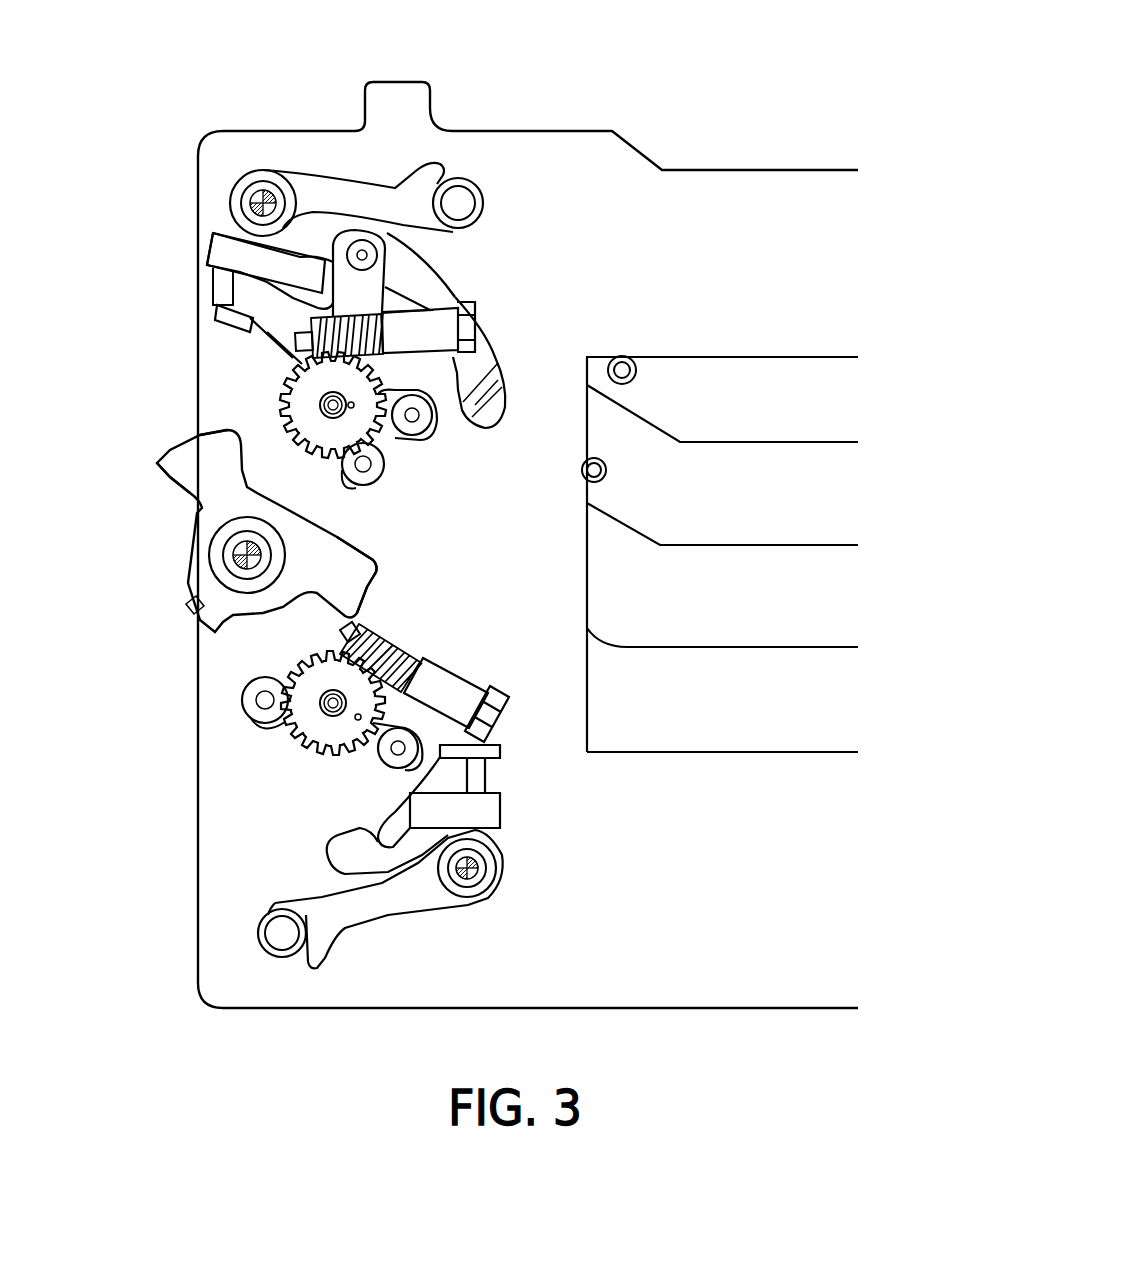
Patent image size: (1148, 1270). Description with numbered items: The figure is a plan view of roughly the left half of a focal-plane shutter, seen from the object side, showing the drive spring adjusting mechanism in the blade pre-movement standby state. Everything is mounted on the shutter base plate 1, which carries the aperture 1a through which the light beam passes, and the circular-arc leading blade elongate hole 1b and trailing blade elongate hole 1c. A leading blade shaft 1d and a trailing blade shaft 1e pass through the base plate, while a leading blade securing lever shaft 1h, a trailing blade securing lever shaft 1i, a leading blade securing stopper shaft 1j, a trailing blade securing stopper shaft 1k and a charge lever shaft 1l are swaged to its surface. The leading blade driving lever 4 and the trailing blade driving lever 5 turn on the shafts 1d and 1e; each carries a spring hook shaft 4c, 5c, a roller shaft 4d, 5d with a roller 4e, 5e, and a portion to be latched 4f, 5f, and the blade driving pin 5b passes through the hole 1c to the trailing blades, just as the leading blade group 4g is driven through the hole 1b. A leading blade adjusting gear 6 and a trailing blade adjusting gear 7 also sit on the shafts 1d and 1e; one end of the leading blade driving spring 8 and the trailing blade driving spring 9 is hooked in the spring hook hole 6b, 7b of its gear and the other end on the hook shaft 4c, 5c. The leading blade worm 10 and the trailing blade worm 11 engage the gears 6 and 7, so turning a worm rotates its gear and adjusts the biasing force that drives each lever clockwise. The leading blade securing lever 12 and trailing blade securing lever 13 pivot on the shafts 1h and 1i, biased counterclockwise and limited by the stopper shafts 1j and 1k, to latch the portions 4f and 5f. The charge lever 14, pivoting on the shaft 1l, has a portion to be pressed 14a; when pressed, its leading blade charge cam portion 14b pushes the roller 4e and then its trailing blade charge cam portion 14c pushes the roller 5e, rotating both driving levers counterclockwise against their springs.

The shutter base plate 1 is at (792, 203).
The aperture 1a is at (712, 760).
The leading blade elongate hole 1b is at (350, 875).
The trailing blade elongate hole 1c is at (497, 320).
The leading blade shaft 1d is at (325, 710).
The trailing blade shaft 1e is at (320, 403).
The leading blade securing lever shaft 1h is at (478, 882).
The trailing blade securing lever shaft 1i is at (250, 212).
The leading blade securing stopper shaft 1j is at (283, 933).
The trailing blade securing stopper shaft 1k is at (462, 206).
The charge lever shaft 1l is at (235, 565).
The leading blade driving lever 4 is at (380, 800).
The spring hook shaft 4c is at (380, 770).
The roller shaft 4d is at (255, 680).
The roller 4e is at (245, 722).
The portion to be latched 4f is at (455, 752).
The leading blade group 4g is at (755, 465).
The trailing blade driving lever 5 is at (287, 347).
The blade driving pin 5b is at (373, 260).
The spring hook shaft 5c is at (412, 440).
The roller shaft 5d is at (372, 477).
The roller 5e is at (357, 482).
The portion to be latched 5f is at (227, 320).
The leading blade adjusting gear 6 is at (323, 675).
The spring hook hole 6b is at (440, 655).
The trailing blade adjusting gear 7 is at (340, 527).
The spring hook hole 7b is at (283, 383).
The leading blade driving spring 8 is at (372, 750).
The trailing blade driving spring 9 is at (392, 432).
The leading blade worm 10 is at (455, 690).
The trailing blade worm 11 is at (508, 373).
The leading blade securing lever 12 is at (482, 775).
The trailing blade securing lever 13 is at (222, 286).
The charge lever 14 is at (190, 616).
The portion to be pressed 14a is at (173, 492).
The leading blade charge cam portion 14b is at (357, 570).
The trailing blade charge cam portion 14c is at (215, 432).